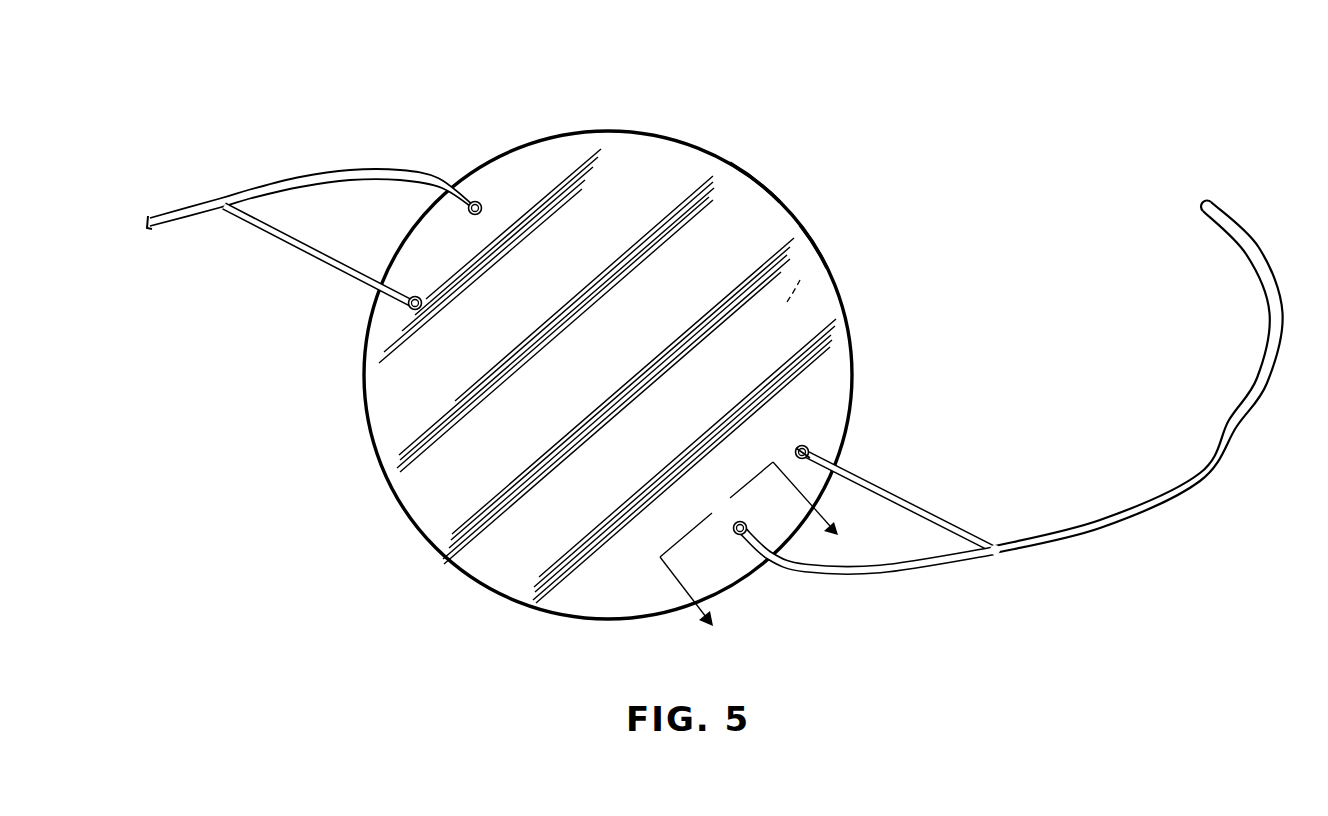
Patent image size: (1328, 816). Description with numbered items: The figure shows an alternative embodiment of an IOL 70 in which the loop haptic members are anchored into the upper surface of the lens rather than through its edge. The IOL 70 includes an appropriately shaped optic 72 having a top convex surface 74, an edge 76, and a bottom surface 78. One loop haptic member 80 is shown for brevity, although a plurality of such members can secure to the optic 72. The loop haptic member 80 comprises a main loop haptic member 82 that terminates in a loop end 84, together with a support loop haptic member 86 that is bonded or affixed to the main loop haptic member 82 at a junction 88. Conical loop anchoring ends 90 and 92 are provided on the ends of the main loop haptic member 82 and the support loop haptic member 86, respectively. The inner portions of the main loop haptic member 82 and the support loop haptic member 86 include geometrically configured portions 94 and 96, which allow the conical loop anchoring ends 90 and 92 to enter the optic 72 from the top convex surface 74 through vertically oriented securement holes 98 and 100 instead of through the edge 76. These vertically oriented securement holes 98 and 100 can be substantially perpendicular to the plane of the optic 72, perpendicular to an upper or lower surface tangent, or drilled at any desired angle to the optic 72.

The IOL 70 is at (848, 83).
The optic 72 is at (788, 217).
The top convex surface 74 is at (745, 193).
The edge 76 is at (817, 242).
The bottom surface 78 is at (787, 302).
The loop haptic member 80 is at (973, 384).
The main loop haptic member 82 is at (1242, 428).
The loop end 84 is at (1203, 204).
The support loop haptic member 86 is at (902, 502).
The junction 88 is at (997, 551).
The conical loop anchoring end 90 is at (738, 521).
The conical loop anchoring end 92 is at (800, 445).
The geometrically configured portion 94 is at (747, 538).
The geometrically configured portion 96 is at (806, 443).
The vertically oriented securement hole 98 is at (733, 527).
The vertically oriented securement hole 100 is at (798, 448).